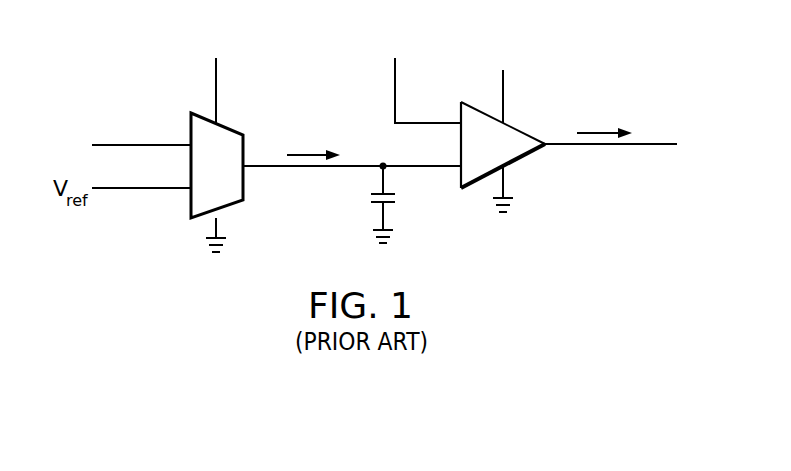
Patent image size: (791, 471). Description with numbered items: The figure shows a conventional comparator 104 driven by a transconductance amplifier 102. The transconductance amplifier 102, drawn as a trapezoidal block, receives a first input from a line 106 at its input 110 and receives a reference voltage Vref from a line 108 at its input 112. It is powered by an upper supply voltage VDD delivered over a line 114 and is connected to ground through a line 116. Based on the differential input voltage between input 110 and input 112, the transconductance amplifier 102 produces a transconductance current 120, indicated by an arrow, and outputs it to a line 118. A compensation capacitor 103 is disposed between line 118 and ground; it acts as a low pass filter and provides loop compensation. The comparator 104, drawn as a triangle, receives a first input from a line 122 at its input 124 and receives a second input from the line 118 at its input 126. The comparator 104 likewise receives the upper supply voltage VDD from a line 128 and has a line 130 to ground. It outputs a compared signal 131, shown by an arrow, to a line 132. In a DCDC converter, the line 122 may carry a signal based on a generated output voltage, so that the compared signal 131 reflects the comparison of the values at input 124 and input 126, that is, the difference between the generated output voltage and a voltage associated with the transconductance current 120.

The transconductance amplifier 102 is at (233, 128).
The compensation capacitor 103 is at (372, 198).
The comparator 104 is at (471, 189).
The line 106 is at (119, 143).
The line 108 is at (118, 191).
The input 110 is at (186, 143).
The input 112 is at (186, 191).
The line 114 is at (216, 79).
The line 116 is at (218, 226).
The line 118 is at (362, 163).
The transconductance current 120 is at (306, 150).
The line 122 is at (395, 80).
The input 124 is at (456, 119).
The input 126 is at (456, 173).
The line 128 is at (503, 100).
The line 130 is at (506, 183).
The compared signal 131 is at (603, 129).
The line 132 is at (642, 149).